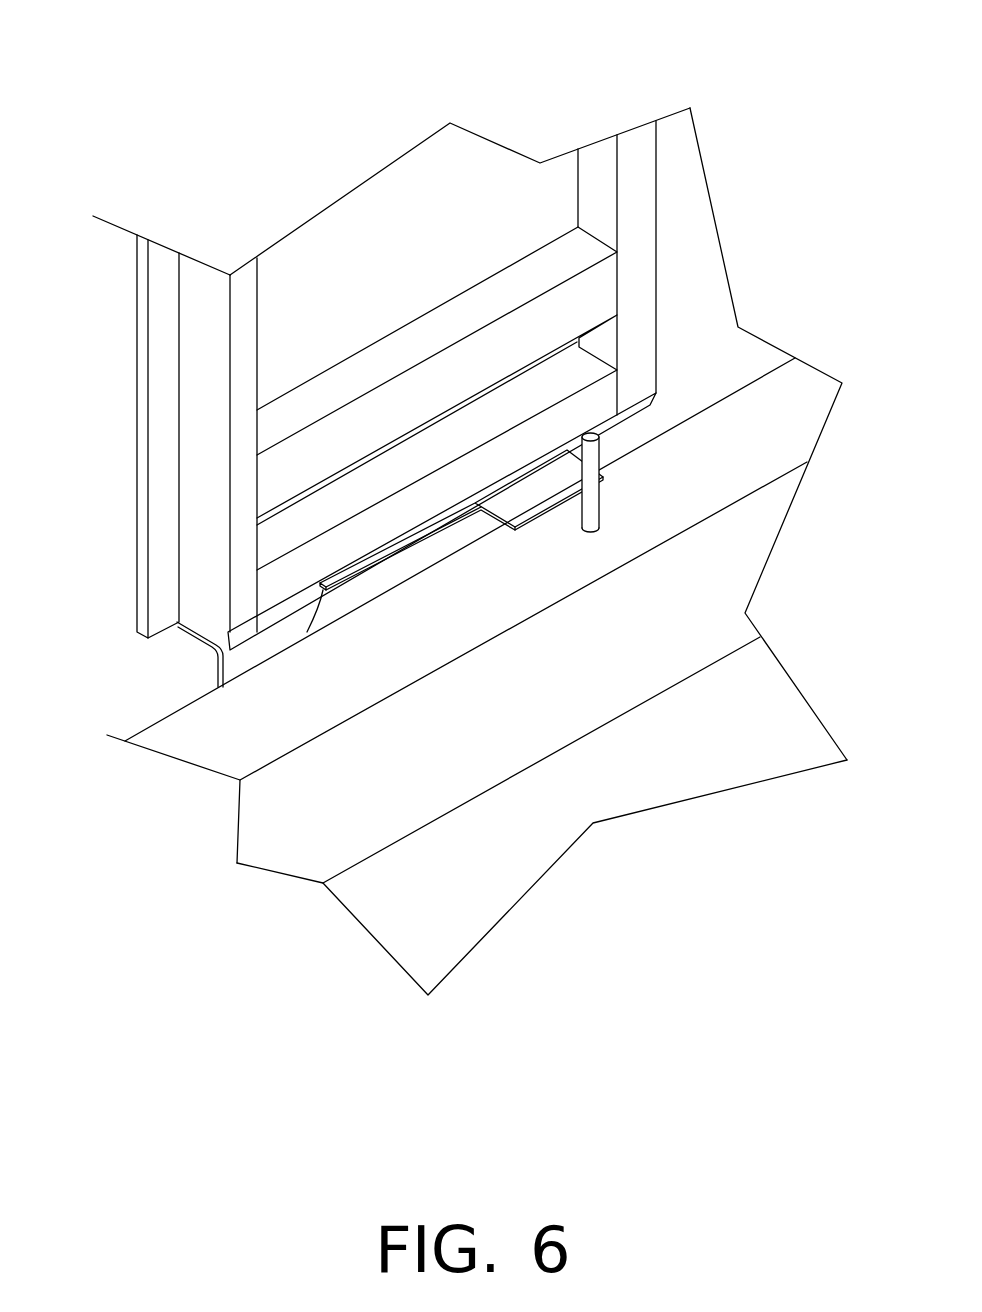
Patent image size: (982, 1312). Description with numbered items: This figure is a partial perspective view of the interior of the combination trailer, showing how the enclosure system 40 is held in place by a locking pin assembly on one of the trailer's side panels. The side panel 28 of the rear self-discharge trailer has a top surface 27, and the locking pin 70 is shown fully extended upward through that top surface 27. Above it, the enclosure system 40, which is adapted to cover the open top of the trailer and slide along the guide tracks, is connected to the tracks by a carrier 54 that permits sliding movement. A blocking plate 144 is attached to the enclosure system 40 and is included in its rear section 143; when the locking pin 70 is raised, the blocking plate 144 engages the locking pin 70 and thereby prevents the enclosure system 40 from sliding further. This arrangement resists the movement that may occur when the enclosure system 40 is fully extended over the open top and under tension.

The top surface 27 is at (273, 733).
The side panel 28 is at (697, 577).
The enclosure system 40 is at (370, 247).
The carrier 54 is at (240, 660).
The locking pin 70 is at (599, 505).
The rear section 143 is at (203, 415).
The blocking plate 144 is at (548, 488).